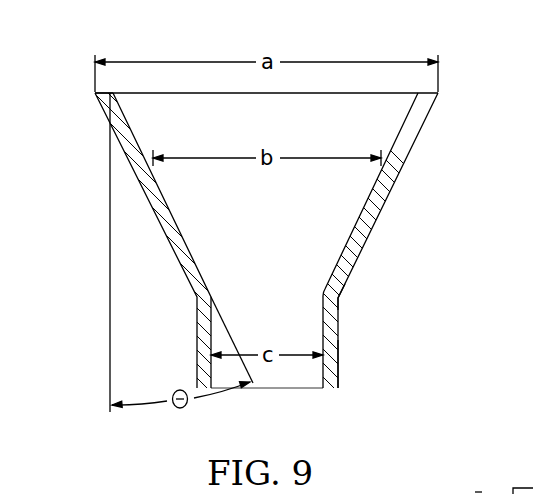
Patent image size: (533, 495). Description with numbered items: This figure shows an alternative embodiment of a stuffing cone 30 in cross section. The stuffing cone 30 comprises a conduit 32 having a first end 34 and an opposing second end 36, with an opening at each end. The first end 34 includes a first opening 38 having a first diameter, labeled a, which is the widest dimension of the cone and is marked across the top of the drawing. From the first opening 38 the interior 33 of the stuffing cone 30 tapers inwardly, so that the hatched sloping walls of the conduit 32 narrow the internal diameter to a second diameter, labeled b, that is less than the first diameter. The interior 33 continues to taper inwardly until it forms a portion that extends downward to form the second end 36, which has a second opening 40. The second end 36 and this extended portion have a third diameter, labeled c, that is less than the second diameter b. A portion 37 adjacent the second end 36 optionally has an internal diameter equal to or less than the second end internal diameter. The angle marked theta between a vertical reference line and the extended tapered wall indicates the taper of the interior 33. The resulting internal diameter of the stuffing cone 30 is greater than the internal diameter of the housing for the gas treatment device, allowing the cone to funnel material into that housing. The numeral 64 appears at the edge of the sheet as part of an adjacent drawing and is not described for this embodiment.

The stuffing cone 30 is at (478, 108).
The conduit 32 is at (378, 212).
The interior 33 is at (190, 257).
The first end 34 is at (88, 102).
The second end 36 is at (351, 288).
The portion adjacent the second end 37 is at (343, 371).
The first opening 38 is at (196, 93).
The second opening 40 is at (274, 390).
The adjacent component 64 is at (532, 395).